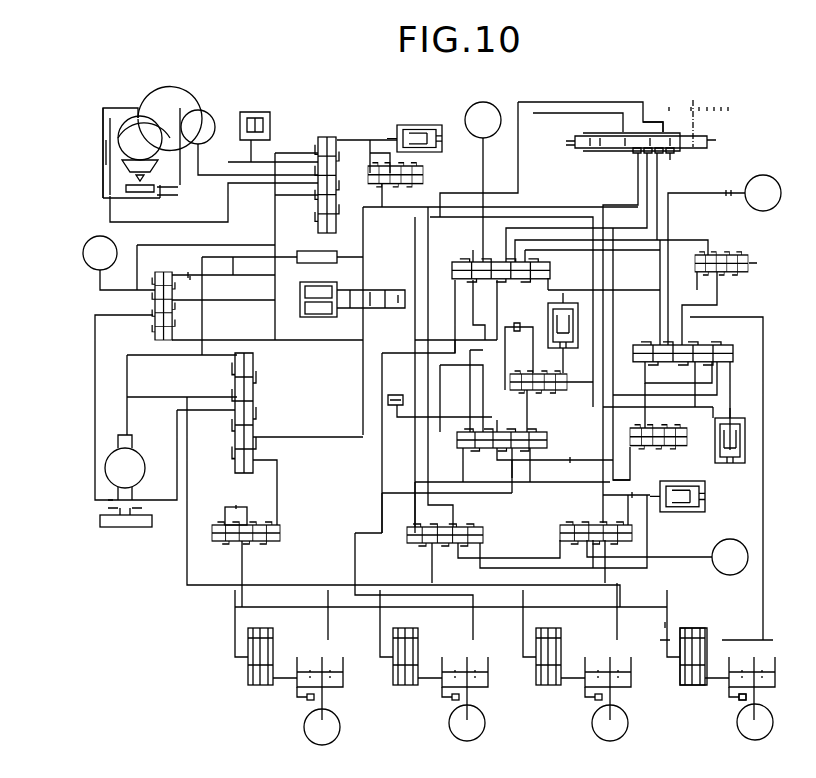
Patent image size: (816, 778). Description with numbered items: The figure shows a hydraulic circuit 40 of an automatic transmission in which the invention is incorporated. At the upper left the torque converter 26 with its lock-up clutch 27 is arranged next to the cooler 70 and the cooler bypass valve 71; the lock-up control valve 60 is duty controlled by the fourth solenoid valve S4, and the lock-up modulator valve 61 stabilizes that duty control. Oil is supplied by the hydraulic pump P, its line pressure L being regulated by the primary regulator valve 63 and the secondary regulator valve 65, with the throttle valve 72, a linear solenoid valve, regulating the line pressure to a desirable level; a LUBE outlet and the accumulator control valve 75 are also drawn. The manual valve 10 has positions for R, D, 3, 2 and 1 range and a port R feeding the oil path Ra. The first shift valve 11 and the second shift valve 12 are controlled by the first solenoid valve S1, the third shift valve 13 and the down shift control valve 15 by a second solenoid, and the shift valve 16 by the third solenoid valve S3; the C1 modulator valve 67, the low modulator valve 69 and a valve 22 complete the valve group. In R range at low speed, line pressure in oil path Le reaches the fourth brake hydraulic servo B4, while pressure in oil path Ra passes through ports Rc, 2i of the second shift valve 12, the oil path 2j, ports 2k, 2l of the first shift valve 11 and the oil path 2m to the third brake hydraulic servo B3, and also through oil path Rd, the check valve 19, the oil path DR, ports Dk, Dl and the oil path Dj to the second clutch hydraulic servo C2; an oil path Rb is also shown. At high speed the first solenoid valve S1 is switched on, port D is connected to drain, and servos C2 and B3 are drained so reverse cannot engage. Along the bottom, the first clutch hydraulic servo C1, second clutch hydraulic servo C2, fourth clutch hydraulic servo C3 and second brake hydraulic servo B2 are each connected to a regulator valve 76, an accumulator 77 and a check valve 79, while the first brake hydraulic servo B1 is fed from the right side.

The hydraulic circuit 40 is at (137, 78).
The lock-up clutch 27 is at (102, 118).
The torque converter 26 is at (150, 120).
The cooler 70 is at (212, 113).
The cooler bypass valve 71 is at (272, 124).
The lock-up control valve 60 is at (326, 134).
The fourth solenoid valve S4 is at (428, 124).
The lock-up modulator valve 61 is at (426, 172).
The third brake hydraulic servo B3 is at (483, 120).
The oil path 2m is at (485, 164).
The oil path Ra is at (553, 102).
The manual valve 10 is at (729, 138).
The line pressure L is at (620, 134).
The port R is at (658, 132).
The port D is at (634, 154).
The third range 3 is at (645, 156).
The second range 2 is at (660, 156).
The first range 1 is at (672, 157).
The first brake hydraulic servo B1 is at (724, 260).
The C1 modulator valve 67 is at (742, 254).
The (1-2) shift valve 11 is at (553, 270).
The port 2l is at (480, 262).
The port 2k is at (475, 282).
The oil path 2j is at (456, 310).
The first solenoid valve S1 is at (572, 350).
The relay valve 22 is at (555, 384).
The shift valve 16 is at (725, 344).
The throttle valve 72 is at (374, 276).
The lubrication LUBE is at (119, 263).
The secondary regulator valve 65 is at (166, 278).
The primary regulator valve 63 is at (226, 388).
The hydraulic pump P is at (116, 445).
The accumulator control valve 75 is at (222, 519).
The oil path Rd is at (385, 352).
The check valve 19 is at (397, 394).
The oil passage Rb is at (471, 391).
The oil path DR is at (452, 398).
The port Rc is at (486, 432).
The port 2i is at (500, 430).
The port Dk is at (538, 411).
The (3-4) shift valve 12 is at (550, 436).
The port Dl is at (520, 469).
The oil path Dj is at (515, 492).
The low modulator valve 69 is at (672, 432).
The third solenoid valve S3 is at (745, 442).
The down shift control valve 15 is at (484, 525).
The (2-3) shift valve 13 is at (562, 524).
The fourth brake hydraulic servo B4 is at (730, 557).
The oil path Le is at (555, 583).
The second brake hydraulic servo B2 is at (289, 667).
The second clutch hydraulic servo C2 is at (434, 665).
The fourth clutch hydraulic servo C3 is at (577, 662).
The first clutch hydraulic servo C1 is at (717, 665).
The regulator valve 76 is at (772, 638).
The accumulator 77 is at (689, 690).
The check valve 79 is at (740, 702).